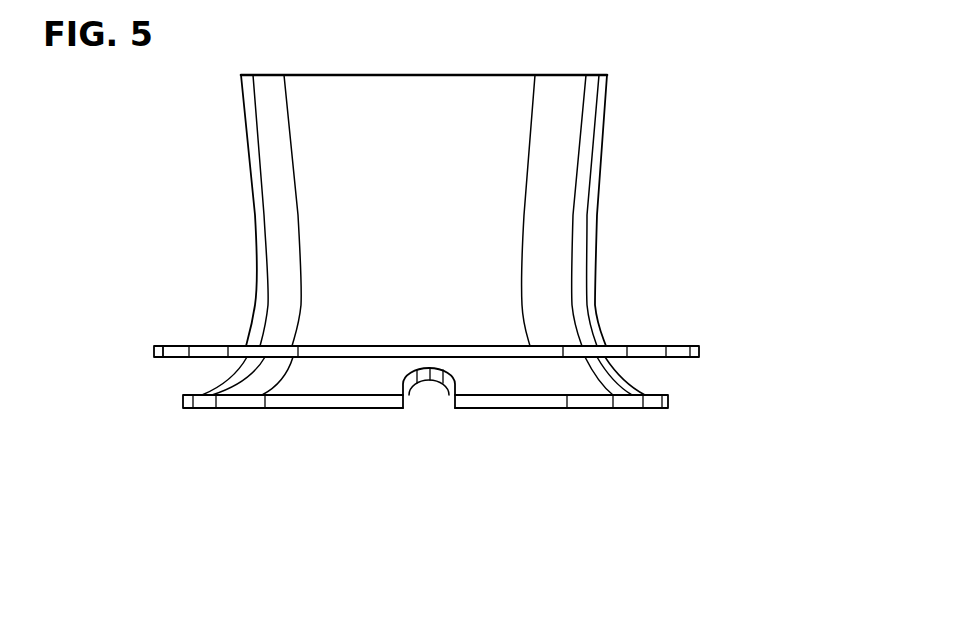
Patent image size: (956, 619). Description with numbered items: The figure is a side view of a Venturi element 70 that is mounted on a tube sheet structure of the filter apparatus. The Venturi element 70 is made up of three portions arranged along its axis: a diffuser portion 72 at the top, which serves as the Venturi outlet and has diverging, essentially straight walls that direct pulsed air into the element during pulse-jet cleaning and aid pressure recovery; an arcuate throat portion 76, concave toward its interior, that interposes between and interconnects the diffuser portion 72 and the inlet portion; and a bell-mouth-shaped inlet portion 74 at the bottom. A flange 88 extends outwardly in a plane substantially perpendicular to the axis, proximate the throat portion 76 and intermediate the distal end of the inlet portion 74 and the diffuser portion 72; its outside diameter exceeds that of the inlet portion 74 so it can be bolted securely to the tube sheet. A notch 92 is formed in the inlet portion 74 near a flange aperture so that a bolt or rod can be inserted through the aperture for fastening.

The Venturi element 70 is at (664, 50).
The diffuser portion 72 is at (713, 75).
The arcuate throat portion 76 is at (713, 295).
The inlet bell-mouth-shaped portion 74 is at (713, 358).
The flange 88 is at (160, 362).
The notch 92 is at (419, 414).